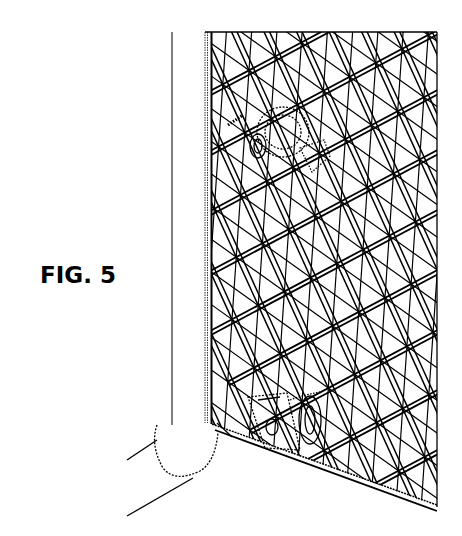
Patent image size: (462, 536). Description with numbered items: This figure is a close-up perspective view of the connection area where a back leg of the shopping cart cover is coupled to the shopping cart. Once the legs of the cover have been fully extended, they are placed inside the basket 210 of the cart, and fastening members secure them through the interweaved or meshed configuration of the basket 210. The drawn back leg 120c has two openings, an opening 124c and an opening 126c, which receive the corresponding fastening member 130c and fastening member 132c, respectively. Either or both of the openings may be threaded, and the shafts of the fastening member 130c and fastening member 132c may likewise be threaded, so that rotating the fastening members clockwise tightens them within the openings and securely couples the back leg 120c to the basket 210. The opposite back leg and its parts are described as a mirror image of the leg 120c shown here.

The back leg 120c is at (300, 65).
The fastening member 130c is at (245, 133).
The opening 124c is at (306, 160).
The opening 126c is at (308, 397).
The fastening member 132c is at (260, 408).
The basket 210 is at (217, 423).